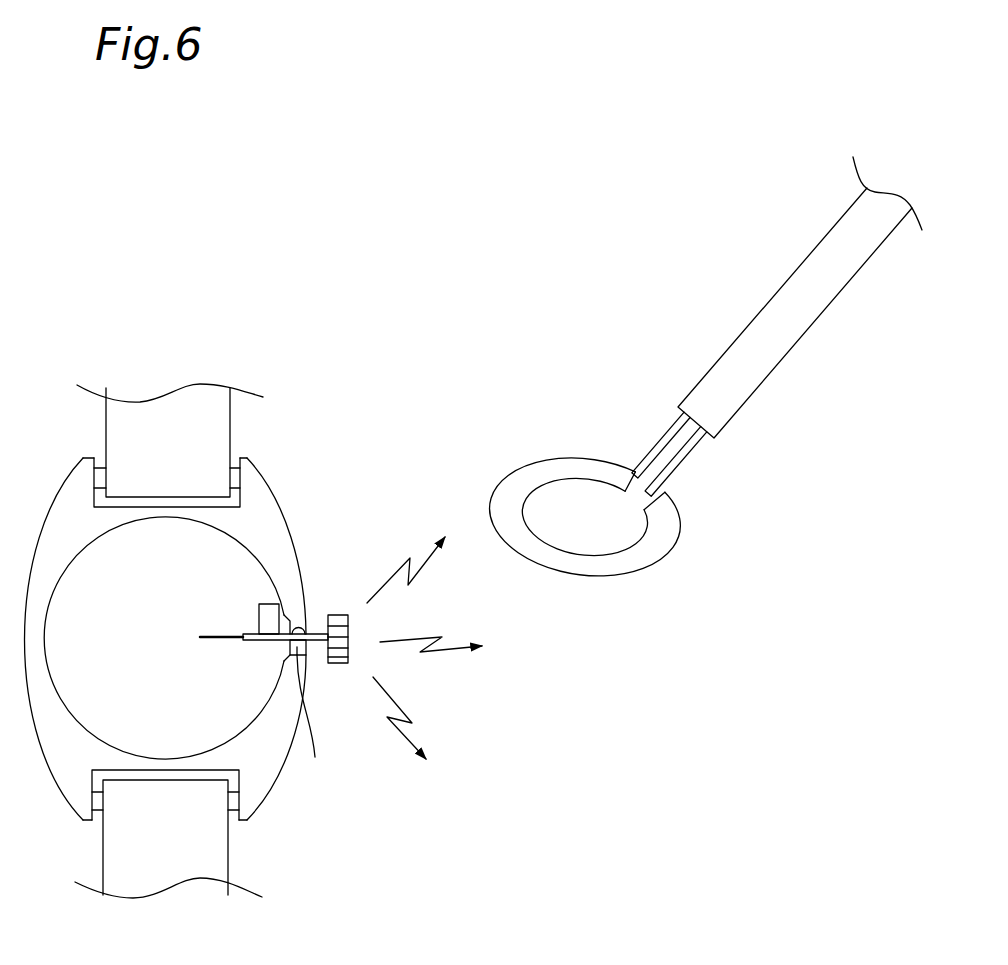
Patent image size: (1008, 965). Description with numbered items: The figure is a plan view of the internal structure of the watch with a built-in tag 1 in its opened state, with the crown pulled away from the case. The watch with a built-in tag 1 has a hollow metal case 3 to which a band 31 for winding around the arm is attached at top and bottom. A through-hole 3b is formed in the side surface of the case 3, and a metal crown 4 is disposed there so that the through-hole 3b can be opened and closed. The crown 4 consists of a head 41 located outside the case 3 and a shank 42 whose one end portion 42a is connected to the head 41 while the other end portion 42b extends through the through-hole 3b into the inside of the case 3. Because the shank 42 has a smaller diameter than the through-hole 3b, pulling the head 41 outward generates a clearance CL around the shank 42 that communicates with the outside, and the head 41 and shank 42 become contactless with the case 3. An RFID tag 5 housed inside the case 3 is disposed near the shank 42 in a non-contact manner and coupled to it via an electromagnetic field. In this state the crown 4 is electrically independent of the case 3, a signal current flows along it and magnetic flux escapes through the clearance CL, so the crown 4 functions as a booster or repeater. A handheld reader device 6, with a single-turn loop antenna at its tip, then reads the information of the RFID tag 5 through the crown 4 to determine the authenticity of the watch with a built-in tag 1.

The watch with a built-in tag 1 is at (22, 419).
The case 3 is at (257, 503).
The band 31 is at (210, 432).
The through-hole 3b is at (308, 610).
The crown 4 is at (362, 623).
The head 41 is at (353, 648).
The shank 42 is at (267, 643).
The one end portion 42a is at (313, 648).
The other end portion 42b is at (203, 637).
The RFID tag 5 is at (268, 617).
The reader device 6 is at (782, 297).
The clearance CL is at (312, 725).